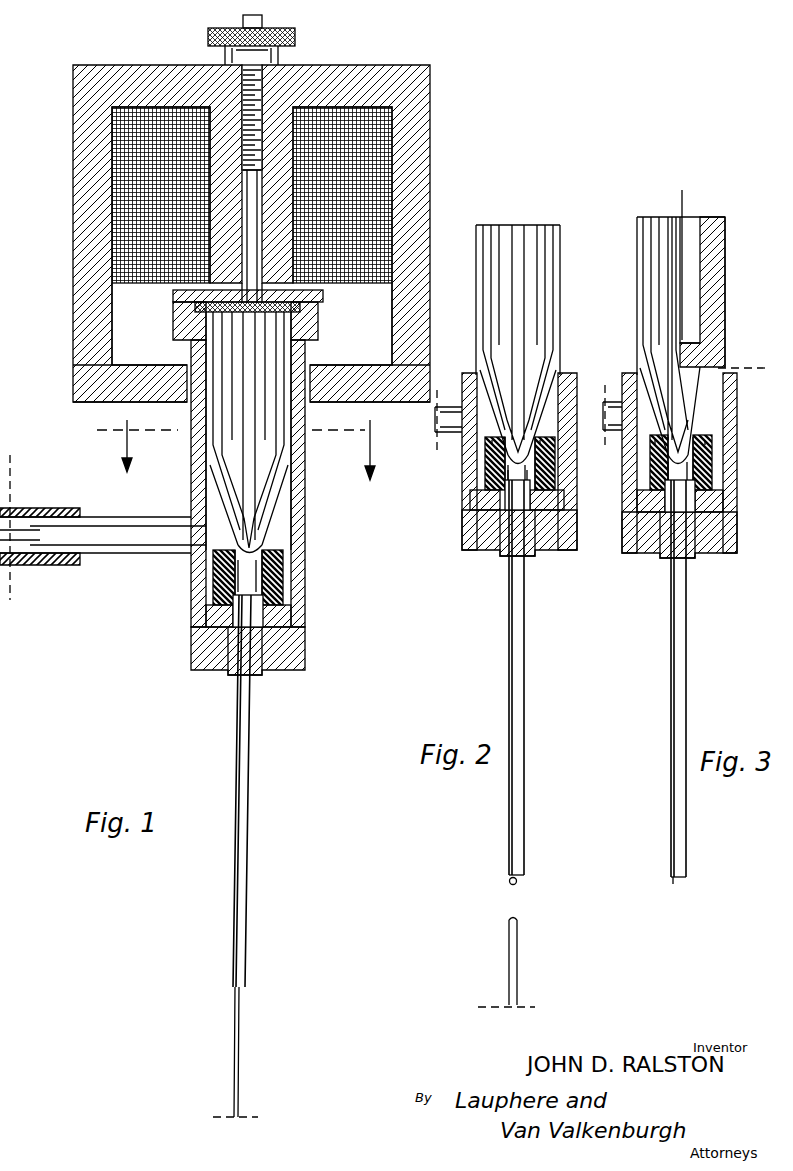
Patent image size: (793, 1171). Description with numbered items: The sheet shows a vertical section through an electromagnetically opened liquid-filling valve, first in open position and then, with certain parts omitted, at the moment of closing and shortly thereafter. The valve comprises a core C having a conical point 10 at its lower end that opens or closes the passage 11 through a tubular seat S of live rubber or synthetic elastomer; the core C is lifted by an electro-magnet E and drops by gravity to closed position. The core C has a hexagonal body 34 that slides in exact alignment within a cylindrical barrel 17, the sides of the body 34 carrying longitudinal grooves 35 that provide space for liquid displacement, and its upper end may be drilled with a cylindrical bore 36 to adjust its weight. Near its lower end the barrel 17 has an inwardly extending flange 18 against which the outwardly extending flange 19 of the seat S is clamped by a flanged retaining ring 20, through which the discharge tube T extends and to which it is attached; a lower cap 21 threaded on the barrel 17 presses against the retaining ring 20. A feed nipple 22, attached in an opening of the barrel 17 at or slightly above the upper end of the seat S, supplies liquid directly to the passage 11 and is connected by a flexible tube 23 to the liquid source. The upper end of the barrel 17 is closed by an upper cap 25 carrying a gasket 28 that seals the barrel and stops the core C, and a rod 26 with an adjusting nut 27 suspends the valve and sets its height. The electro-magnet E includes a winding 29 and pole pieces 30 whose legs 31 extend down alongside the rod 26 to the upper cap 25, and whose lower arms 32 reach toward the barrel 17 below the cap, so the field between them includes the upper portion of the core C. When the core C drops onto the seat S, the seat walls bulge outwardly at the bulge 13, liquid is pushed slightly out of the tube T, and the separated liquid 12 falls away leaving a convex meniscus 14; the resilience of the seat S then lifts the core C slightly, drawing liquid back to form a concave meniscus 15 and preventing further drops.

In FIG. 1, the conical point 10 is at (249, 522).
In FIG. 2, the conical point 10 is at (523, 435).
In FIG. 3, the conical point 10 is at (683, 428).
In FIG. 1, the passage 11 is at (246, 576).
In FIG. 2, the passage 11 is at (490, 462).
In FIG. 3, the passage 11 is at (715, 433).
In FIG. 2, the separated liquid 12 is at (515, 962).
In FIG. 2, the bulge 13 is at (548, 453).
In FIG. 2, the convex meniscus 14 is at (517, 882).
In FIG. 3, the concave meniscus 15 is at (674, 882).
In FIG. 1, the cylindrical barrel 17 is at (191, 496).
In FIG. 2, the cylindrical barrel 17 is at (566, 414).
In FIG. 3, the cylindrical barrel 17 is at (732, 425).
In FIG. 1, the barrel flange 18 is at (285, 606).
In FIG. 2, the barrel flange 18 is at (480, 481).
In FIG. 3, the barrel flange 18 is at (715, 481).
In FIG. 1, the seat flange 19 is at (285, 617).
In FIG. 2, the seat flange 19 is at (470, 501).
In FIG. 3, the seat flange 19 is at (725, 501).
In FIG. 1, the retaining ring 20 is at (290, 646).
In FIG. 2, the retaining ring 20 is at (485, 533).
In FIG. 3, the retaining ring 20 is at (730, 541).
In FIG. 1, the lower cap 21 is at (292, 676).
In FIG. 2, the lower cap 21 is at (490, 546).
In FIG. 3, the lower cap 21 is at (730, 556).
In FIG. 1, the feed nipple 22 is at (153, 548).
In FIG. 2, the feed nipple 22 is at (450, 414).
In FIG. 3, the feed nipple 22 is at (608, 414).
In FIG. 1, the flexible tube 23 is at (30, 562).
In FIG. 1, the upper cap 25 is at (320, 321).
In FIG. 1, the rod 26 is at (252, 268).
In FIG. 1, the adjusting nut 27 is at (296, 36).
In FIG. 1, the gasket 28 is at (198, 318).
In FIG. 1, the winding 29 is at (365, 193).
In FIG. 1, the pole pieces 30 is at (78, 327).
In FIG. 1, the legs 31 is at (225, 262).
In FIG. 1, the lower arms 32 is at (170, 376).
In FIG. 1, the body 34 is at (240, 393).
In FIG. 2, the body 34 is at (515, 297).
In FIG. 3, the body 34 is at (668, 292).
In FIG. 1, the grooves 35 is at (218, 457).
In FIG. 2, the grooves 35 is at (553, 225).
In FIG. 3, the grooves 35 is at (675, 217).
In FIG. 3, the cylindrical bore 36 is at (692, 269).
In FIG. 1, the core C is at (265, 396).
In FIG. 2, the core C is at (535, 328).
In FIG. 3, the core C is at (712, 334).
In FIG. 1, the electro-magnet E is at (415, 124).
In FIG. 1, the tubular seat S is at (258, 548).
In FIG. 2, the tubular seat S is at (545, 458).
In FIG. 3, the tubular seat S is at (690, 468).
In FIG. 1, the discharge tube T is at (248, 815).
In FIG. 2, the discharge tube T is at (525, 653).
In FIG. 3, the discharge tube T is at (687, 656).